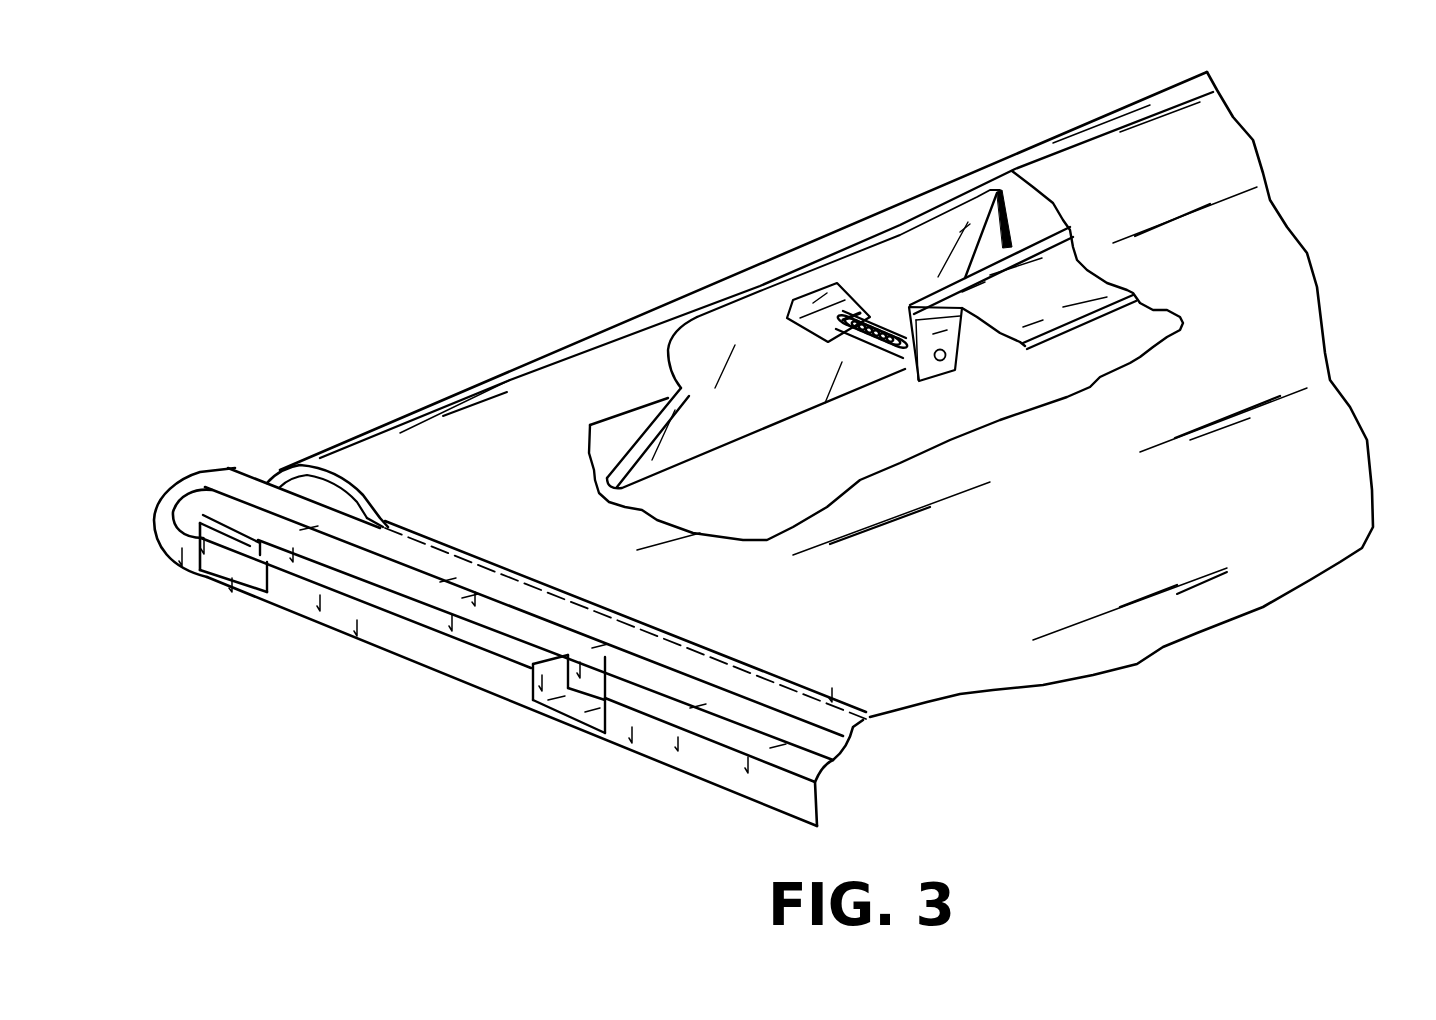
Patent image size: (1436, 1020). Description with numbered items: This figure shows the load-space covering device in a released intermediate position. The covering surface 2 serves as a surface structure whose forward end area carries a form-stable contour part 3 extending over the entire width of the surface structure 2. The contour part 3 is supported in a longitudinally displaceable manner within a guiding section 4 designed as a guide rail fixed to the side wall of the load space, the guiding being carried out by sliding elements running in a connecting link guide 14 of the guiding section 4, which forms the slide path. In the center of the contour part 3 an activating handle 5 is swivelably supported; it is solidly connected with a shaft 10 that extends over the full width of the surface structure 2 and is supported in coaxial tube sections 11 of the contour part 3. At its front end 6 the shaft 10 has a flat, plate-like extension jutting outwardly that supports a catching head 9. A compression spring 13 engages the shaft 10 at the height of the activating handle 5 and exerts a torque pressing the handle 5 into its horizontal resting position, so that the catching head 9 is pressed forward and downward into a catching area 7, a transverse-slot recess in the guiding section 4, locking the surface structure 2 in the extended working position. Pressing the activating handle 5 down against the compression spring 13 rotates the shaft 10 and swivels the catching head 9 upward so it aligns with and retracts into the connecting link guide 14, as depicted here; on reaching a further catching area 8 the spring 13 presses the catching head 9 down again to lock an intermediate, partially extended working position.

The covering surface 2 is at (1257, 540).
The contour part 3 is at (1030, 303).
The guiding section 4 is at (853, 727).
The activating handle 5 is at (762, 318).
The front end 6 is at (305, 493).
The catching area 7 is at (225, 550).
The catching area 8 is at (553, 713).
The catching head 9 is at (251, 548).
The shaft 10 is at (345, 493).
The tube section 11 is at (377, 517).
The compression spring 13 is at (878, 335).
The connecting link guide 14 is at (412, 600).